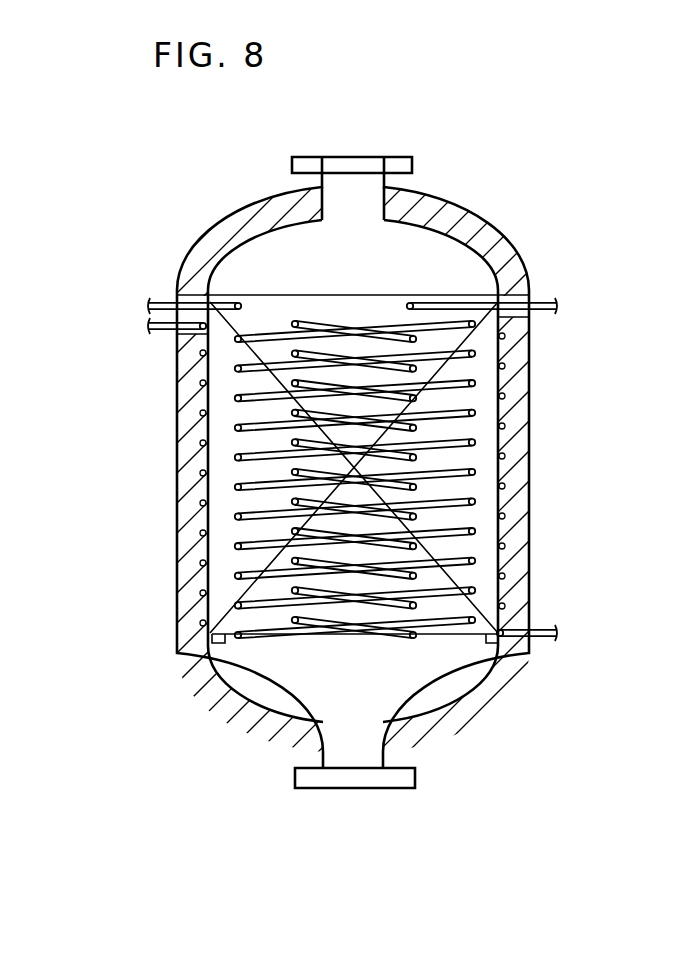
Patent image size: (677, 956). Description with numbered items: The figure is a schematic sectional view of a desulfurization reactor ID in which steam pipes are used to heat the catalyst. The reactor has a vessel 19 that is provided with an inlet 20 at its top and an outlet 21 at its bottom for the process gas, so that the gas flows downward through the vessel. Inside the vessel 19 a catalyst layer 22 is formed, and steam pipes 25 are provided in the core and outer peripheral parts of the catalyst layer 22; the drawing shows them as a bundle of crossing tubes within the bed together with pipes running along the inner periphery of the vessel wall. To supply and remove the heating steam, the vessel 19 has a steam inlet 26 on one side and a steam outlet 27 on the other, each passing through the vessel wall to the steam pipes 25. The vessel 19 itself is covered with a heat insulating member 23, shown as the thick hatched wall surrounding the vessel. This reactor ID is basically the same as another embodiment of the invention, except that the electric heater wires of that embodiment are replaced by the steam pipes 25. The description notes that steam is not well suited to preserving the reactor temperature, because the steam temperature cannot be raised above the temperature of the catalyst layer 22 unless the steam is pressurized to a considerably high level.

The vessel 19 is at (500, 250).
The desulfurization reactor ID is at (485, 213).
The inlet 20 is at (353, 143).
The outlet 21 is at (353, 792).
The catalyst layer 22 is at (492, 480).
The heat insulating member 23 is at (525, 560).
The steam pipes 25 is at (512, 366).
The steam inlet 26 is at (130, 307).
The steam outlet 27 is at (567, 305).